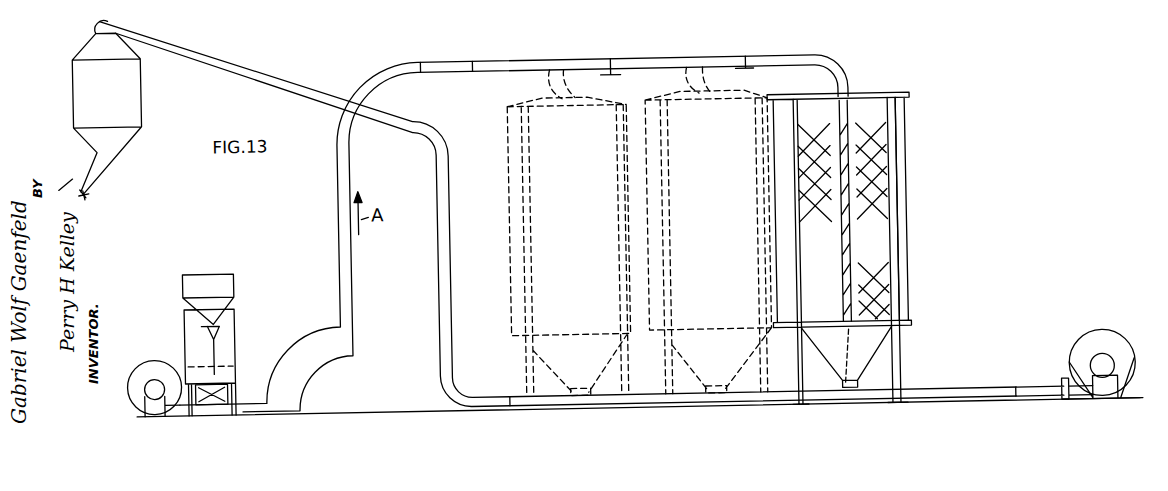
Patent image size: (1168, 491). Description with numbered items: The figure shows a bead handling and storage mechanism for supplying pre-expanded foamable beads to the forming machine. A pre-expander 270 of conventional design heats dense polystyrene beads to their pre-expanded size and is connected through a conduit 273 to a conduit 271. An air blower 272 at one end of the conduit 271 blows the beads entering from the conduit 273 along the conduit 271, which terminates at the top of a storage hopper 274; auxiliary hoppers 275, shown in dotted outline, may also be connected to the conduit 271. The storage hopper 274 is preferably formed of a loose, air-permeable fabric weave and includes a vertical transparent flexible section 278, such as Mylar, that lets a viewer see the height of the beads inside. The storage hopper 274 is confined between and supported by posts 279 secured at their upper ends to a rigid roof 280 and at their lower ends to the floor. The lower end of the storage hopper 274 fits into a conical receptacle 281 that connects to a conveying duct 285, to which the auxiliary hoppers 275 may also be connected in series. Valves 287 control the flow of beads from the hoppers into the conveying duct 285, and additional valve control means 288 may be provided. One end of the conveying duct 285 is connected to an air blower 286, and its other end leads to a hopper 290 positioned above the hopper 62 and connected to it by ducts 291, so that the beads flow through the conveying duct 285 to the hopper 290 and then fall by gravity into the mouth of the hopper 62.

The hopper 290 is at (76, 75).
The ducts 291 is at (84, 159).
The hopper 62 is at (90, 186).
The conduit 271 is at (588, 58).
The valve control means 288 is at (752, 66).
The air blower 272 is at (152, 352).
The pre-expander 270 is at (233, 268).
The conduit 273 is at (225, 387).
The auxiliary hoppers 275 is at (551, 189).
The rigid roof 280 is at (862, 98).
The storage hopper 274 is at (909, 143).
The posts 279 is at (800, 240).
The vertical transparent flexible section 278 is at (849, 247).
The conical receptacle 281 is at (882, 360).
The valves 287 is at (829, 356).
The conveying duct 285 is at (752, 395).
The air blower 286 is at (1090, 344).